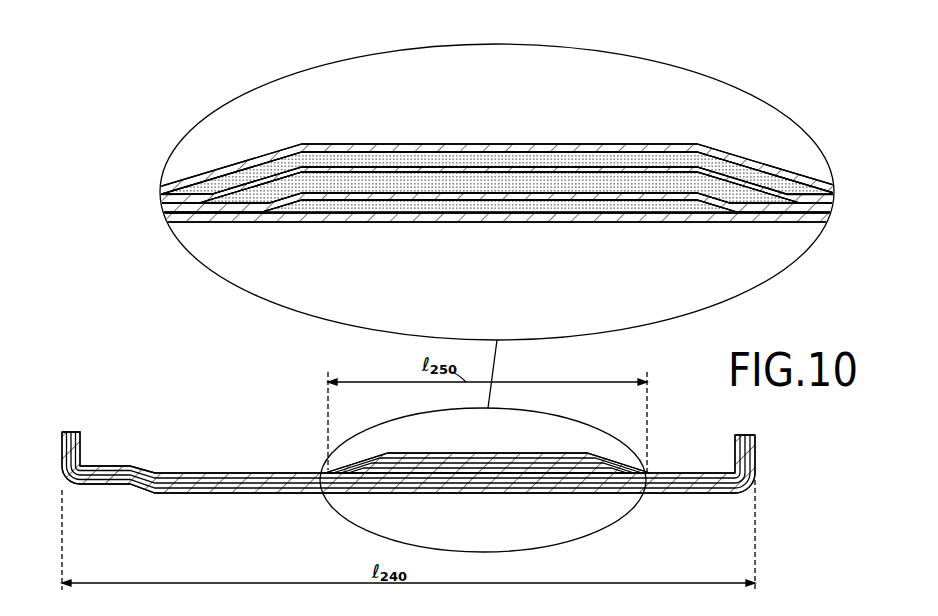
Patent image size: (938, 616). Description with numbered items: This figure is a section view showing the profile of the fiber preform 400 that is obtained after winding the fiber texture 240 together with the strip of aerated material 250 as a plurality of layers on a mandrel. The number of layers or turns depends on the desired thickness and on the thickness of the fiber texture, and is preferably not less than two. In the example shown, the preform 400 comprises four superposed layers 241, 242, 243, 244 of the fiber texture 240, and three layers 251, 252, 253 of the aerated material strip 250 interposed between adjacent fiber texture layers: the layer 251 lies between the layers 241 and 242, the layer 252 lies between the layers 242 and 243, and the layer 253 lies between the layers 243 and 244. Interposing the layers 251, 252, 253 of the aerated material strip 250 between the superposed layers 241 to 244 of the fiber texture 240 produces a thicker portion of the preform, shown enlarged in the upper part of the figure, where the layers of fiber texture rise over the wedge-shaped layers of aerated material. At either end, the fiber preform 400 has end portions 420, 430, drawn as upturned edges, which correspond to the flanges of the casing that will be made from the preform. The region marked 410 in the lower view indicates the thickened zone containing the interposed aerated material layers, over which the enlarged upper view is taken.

The fiber texture 240 is at (472, 137).
The first layer of fiber texture 241 is at (170, 225).
The second layer of fiber texture 242 is at (225, 200).
The third layer of fiber texture 243 is at (240, 183).
The fourth layer of fiber texture 244 is at (257, 163).
The strip of aerated material 250 is at (499, 135).
The first layer of aerated material strip 251 is at (407, 97).
The second layer of aerated material strip 252 is at (497, 183).
The third layer of aerated material strip 253 is at (428, 158).
The fiber preform 400 is at (198, 462).
The reinforced region 410 is at (407, 453).
The end portion 420 is at (73, 432).
The end portion 430 is at (747, 435).